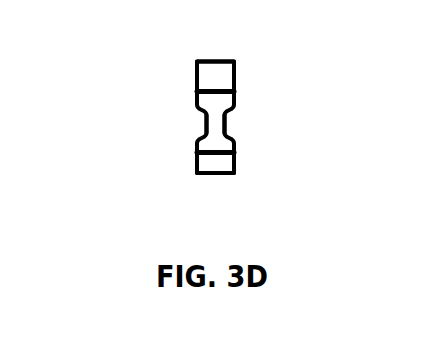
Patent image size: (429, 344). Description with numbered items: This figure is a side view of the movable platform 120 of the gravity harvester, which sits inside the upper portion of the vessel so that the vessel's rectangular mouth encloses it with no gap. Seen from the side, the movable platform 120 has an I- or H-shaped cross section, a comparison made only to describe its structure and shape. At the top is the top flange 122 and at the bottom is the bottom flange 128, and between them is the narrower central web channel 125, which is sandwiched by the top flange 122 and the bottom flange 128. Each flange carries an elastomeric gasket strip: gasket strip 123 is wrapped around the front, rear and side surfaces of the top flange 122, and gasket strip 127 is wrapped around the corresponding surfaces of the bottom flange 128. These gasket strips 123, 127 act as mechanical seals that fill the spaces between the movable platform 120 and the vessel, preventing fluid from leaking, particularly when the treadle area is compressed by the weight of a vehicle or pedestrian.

The movable platform 120 is at (260, 62).
The top flange 122 is at (175, 60).
The elastomeric gasket strip 123 is at (184, 84).
The central web channel 125 is at (218, 117).
The elastomeric gasket strip 127 is at (186, 141).
The bottom flange 128 is at (178, 157).